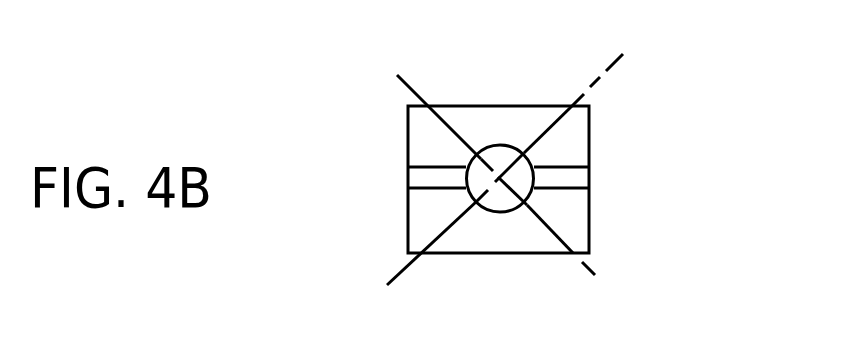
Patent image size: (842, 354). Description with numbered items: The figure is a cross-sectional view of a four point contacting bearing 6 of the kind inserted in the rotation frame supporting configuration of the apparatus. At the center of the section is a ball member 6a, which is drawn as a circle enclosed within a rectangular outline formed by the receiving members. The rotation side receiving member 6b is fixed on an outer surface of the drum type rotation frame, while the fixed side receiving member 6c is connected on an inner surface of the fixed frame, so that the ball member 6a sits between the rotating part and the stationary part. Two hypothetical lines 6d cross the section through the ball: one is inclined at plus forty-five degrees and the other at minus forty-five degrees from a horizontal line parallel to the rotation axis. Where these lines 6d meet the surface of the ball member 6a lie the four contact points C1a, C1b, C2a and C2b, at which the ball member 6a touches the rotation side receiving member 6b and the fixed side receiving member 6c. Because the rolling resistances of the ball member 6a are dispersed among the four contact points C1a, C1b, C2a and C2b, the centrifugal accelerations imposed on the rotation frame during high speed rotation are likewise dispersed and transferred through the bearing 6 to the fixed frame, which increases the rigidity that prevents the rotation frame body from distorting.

The four point contacting bearing 6 is at (529, 177).
The ball member 6a is at (500, 203).
The rotation side receiving member 6b is at (577, 222).
The fixed side receiving member 6c is at (492, 122).
The hypothetical line 6d is at (407, 88).
The contact point C1a is at (475, 150).
The contact point C1b is at (520, 153).
The contact point C2a is at (470, 205).
The contact point C2b is at (523, 205).